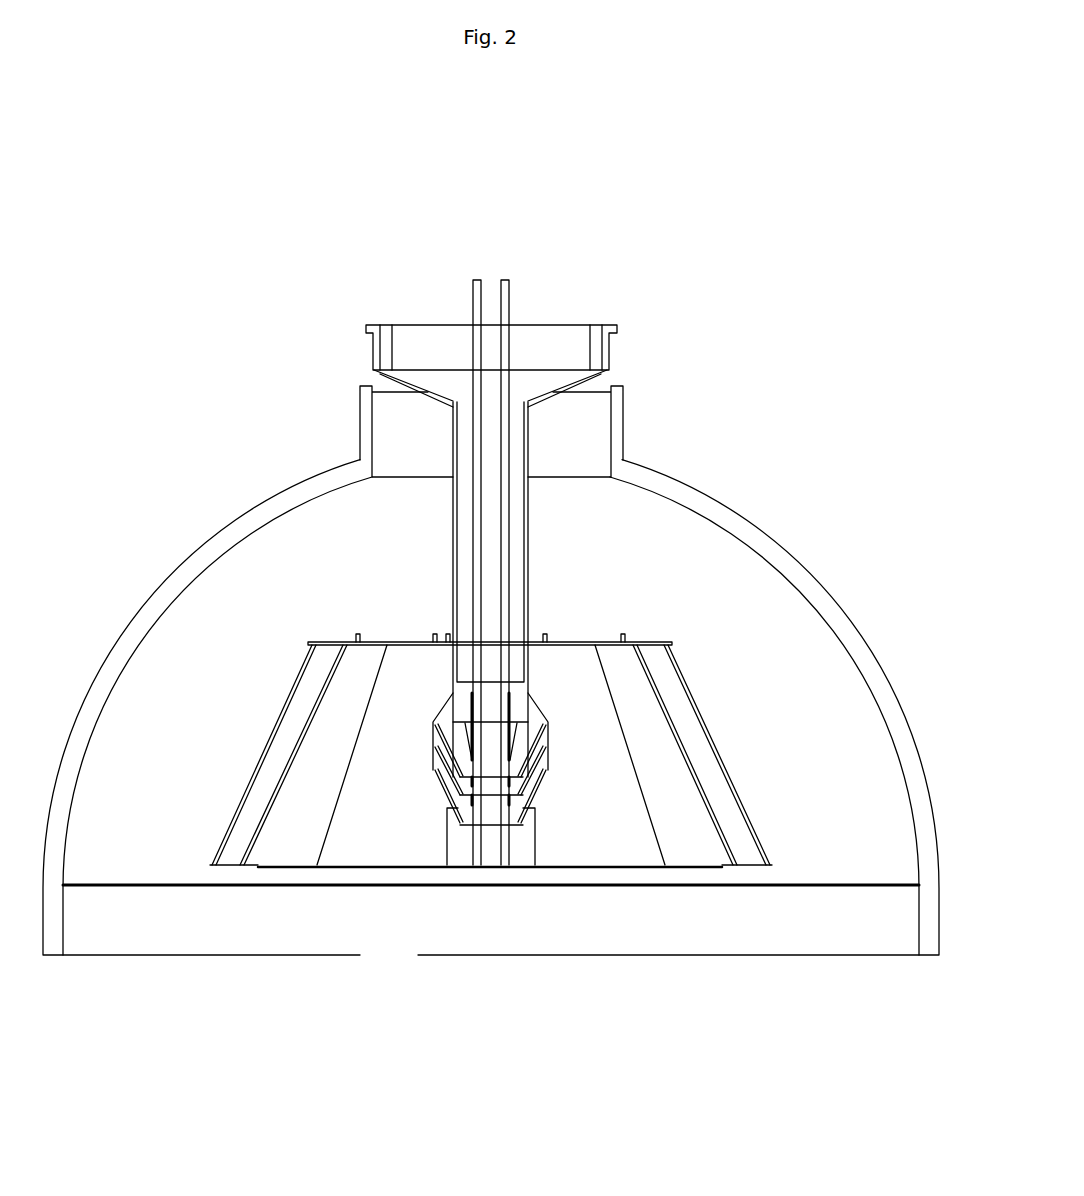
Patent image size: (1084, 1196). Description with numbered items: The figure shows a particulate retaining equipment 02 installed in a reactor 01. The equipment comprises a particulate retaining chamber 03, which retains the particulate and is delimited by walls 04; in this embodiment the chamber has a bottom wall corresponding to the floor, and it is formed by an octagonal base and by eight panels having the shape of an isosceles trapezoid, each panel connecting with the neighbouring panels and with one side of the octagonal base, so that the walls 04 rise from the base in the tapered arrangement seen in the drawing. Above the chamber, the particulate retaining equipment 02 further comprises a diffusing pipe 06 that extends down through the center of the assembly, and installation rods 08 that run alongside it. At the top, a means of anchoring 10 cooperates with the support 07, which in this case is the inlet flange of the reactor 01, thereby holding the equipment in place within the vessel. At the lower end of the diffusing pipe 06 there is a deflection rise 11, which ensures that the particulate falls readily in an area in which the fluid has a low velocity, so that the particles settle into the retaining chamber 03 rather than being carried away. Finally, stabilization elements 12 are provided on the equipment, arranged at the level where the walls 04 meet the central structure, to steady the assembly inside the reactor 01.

The reactor 01 is at (705, 482).
The particulate retaining equipment 02 is at (638, 625).
The particulate retaining chamber 03 is at (783, 885).
The walls 04 is at (721, 694).
The diffusing pipe 06 is at (443, 567).
The support 07 is at (357, 390).
The installation rods 08 is at (513, 293).
The means of anchoring 10 is at (613, 345).
The deflection rise 11 is at (437, 838).
The stabilization elements 12 is at (377, 636).